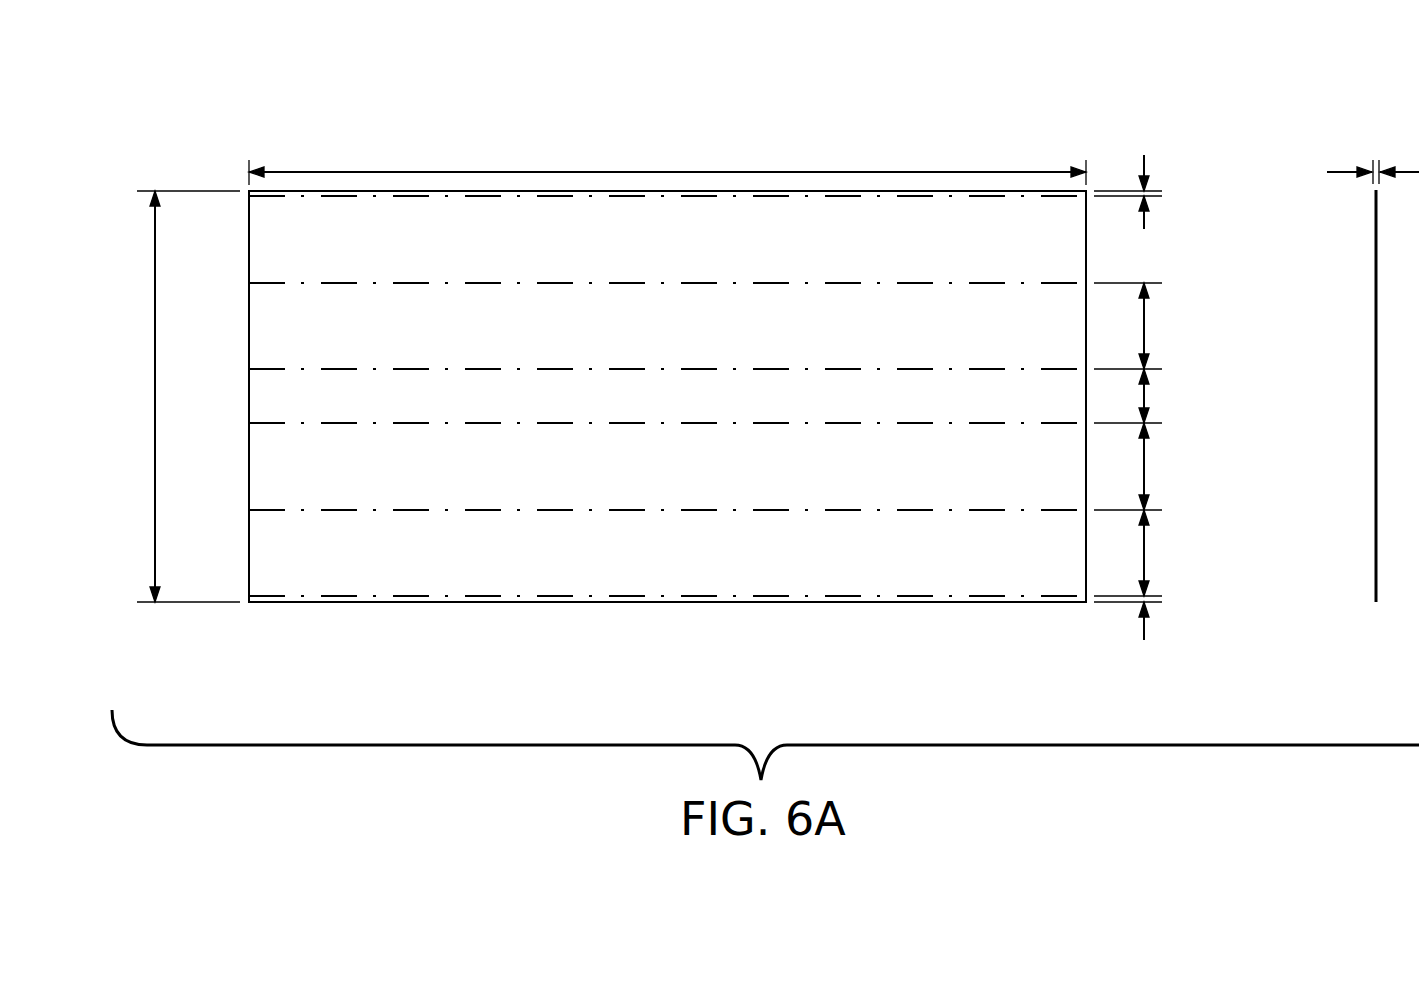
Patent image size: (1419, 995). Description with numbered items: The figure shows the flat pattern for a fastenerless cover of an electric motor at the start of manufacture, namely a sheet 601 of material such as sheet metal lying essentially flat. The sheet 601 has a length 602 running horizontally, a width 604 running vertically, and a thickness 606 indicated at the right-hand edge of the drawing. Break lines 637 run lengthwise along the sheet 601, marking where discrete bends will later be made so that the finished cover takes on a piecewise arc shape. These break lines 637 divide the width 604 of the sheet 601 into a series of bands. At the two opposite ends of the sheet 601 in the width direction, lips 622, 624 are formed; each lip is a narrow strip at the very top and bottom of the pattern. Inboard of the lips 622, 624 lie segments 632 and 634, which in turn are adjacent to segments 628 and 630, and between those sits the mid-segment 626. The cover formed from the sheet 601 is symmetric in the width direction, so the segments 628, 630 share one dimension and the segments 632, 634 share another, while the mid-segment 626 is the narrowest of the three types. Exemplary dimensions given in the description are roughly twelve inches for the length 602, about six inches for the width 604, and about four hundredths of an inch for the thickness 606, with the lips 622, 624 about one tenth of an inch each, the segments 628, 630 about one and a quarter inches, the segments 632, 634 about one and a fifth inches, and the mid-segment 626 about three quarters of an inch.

The sheet 601 is at (278, 637).
The length 602 is at (662, 172).
The width 604 is at (155, 380).
The thickness 606 is at (1330, 172).
The lip 622 is at (1146, 229).
The lip 624 is at (1146, 633).
The mid-segment 626 is at (1160, 396).
The segment 628 is at (1160, 327).
The segment 630 is at (1160, 466).
The segment 632 is at (1166, 249).
The segment 634 is at (1160, 548).
The break line 637 is at (266, 291).